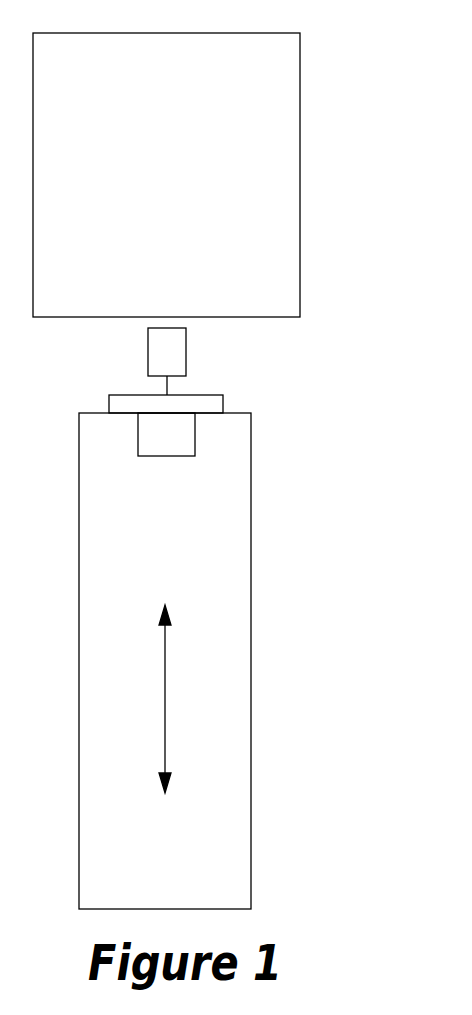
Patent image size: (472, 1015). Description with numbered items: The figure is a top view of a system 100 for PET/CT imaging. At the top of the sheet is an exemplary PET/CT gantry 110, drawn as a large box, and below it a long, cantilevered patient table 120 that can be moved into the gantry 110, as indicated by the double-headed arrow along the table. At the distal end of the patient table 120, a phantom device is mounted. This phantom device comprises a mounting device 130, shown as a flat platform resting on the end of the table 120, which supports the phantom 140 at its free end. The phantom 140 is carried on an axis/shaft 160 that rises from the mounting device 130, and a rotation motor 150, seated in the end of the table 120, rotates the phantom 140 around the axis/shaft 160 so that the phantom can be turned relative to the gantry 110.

The system 100 is at (417, 215).
The PET/CT gantry 110 is at (272, 223).
The patient table 120 is at (243, 643).
The mounting device 130 is at (203, 403).
The phantom 140 is at (177, 341).
The rotation motor 150 is at (185, 432).
The axis/shaft 160 is at (162, 385).